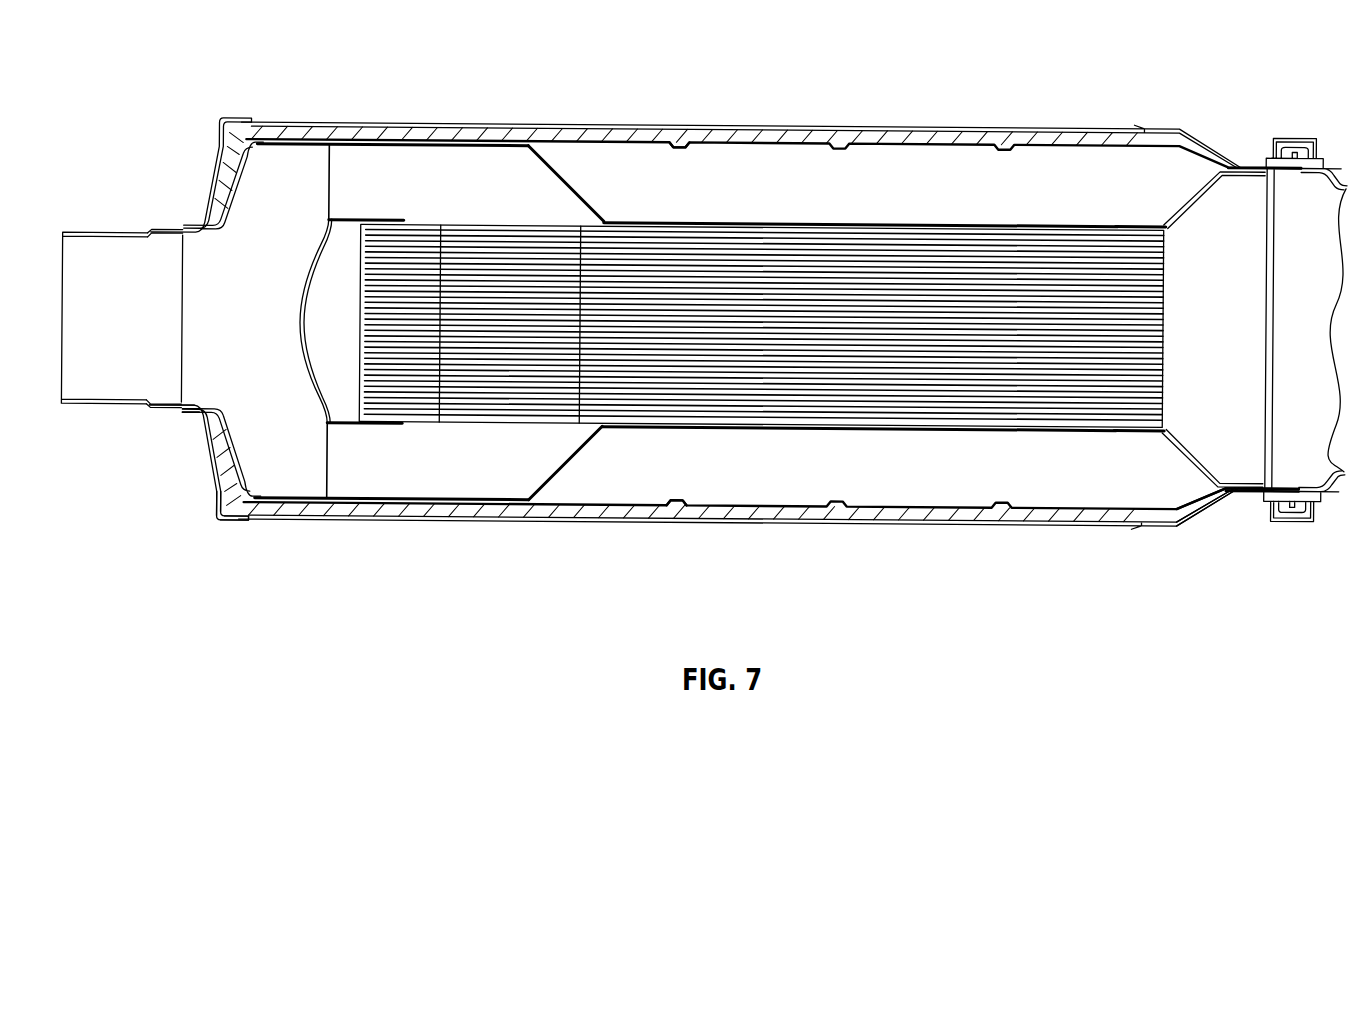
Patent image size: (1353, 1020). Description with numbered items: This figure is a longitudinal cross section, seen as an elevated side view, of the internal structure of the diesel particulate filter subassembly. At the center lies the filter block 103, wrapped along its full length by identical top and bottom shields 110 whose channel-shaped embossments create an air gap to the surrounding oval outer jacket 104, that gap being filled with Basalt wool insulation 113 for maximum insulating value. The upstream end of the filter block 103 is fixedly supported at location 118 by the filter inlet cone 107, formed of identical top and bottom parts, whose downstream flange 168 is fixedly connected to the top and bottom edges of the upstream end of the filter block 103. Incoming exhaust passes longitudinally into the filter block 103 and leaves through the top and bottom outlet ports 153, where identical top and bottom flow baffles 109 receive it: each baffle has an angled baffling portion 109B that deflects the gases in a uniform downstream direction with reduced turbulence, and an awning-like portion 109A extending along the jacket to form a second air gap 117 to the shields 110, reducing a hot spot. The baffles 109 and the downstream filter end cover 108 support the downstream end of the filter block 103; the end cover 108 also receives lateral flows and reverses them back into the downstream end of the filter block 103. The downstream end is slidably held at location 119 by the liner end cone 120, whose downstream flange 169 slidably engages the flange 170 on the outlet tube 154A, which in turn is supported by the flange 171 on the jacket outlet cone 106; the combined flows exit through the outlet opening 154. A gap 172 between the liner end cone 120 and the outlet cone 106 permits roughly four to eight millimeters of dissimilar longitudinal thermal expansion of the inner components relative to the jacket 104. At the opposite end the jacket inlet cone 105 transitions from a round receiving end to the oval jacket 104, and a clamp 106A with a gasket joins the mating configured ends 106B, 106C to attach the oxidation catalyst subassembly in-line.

The filter block 103 is at (1007, 227).
The outer jacket 104 is at (800, 522).
The jacket inlet cone 105 is at (1202, 515).
The jacket outlet cone 106 is at (220, 523).
The clamp 106A is at (1290, 137).
The mating configured end 106B is at (1257, 495).
The mating configured end 106C is at (1323, 497).
The filter inlet cone 107 is at (1210, 437).
The filter end cover 108 is at (300, 318).
The flow baffle 109 is at (686, 324).
The awning-like portion 109A is at (457, 167).
The angled baffling portion 109B is at (567, 172).
The top and bottom shield 110 is at (773, 326).
The Basalt wool insulation 113 is at (684, 144).
The second air gap 117 is at (397, 485).
The fixed support location 118 is at (1157, 497).
The slip-permitting support location 119 is at (170, 418).
The liner end cone 120 is at (201, 354).
The outlet port 153 is at (567, 213).
The outlet opening 154 is at (112, 292).
The outlet tube 154A is at (115, 232).
The downstream flange 168 is at (1128, 433).
The downstream flange 169 is at (163, 404).
The flange 170 is at (165, 412).
The flange 171 is at (152, 437).
The gap 172 is at (218, 507).